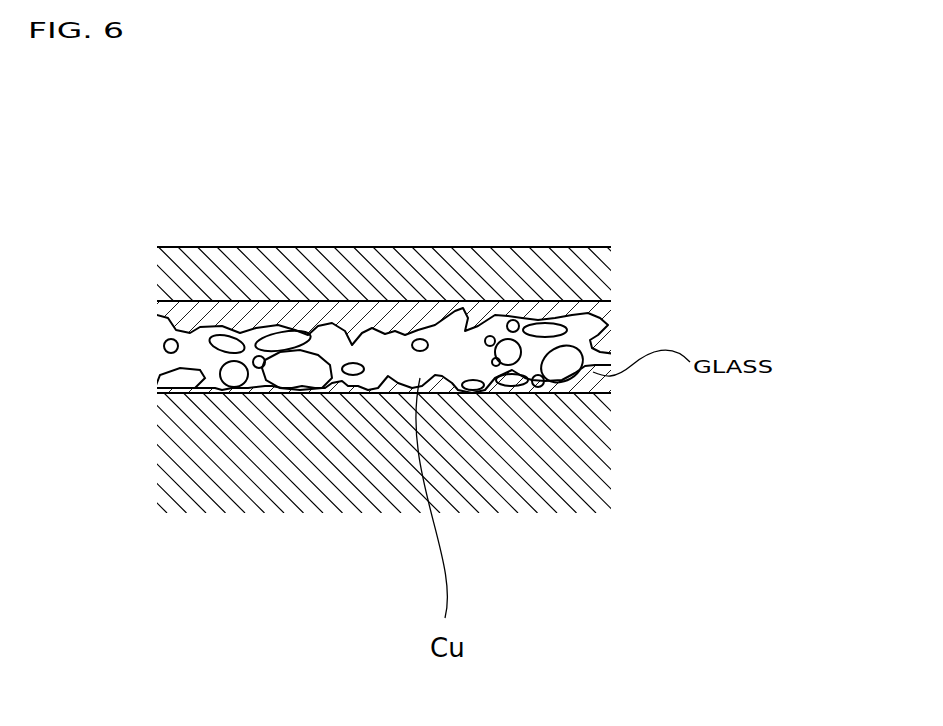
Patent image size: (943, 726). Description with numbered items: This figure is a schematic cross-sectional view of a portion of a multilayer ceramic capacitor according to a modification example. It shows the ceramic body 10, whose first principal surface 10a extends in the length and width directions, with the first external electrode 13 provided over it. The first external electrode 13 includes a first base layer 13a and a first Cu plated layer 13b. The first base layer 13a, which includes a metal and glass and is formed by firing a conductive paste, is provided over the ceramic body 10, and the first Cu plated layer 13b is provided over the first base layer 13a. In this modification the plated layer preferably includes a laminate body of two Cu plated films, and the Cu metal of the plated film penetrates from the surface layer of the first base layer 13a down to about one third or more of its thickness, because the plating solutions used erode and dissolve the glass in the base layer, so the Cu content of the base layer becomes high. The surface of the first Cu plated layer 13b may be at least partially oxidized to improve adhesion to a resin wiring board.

The ceramic body 10 is at (330, 383).
The first principal surface 10a is at (235, 393).
The first external electrode 13 is at (508, 243).
The first base layer 13a is at (413, 301).
The first Cu plated layer 13b is at (580, 248).